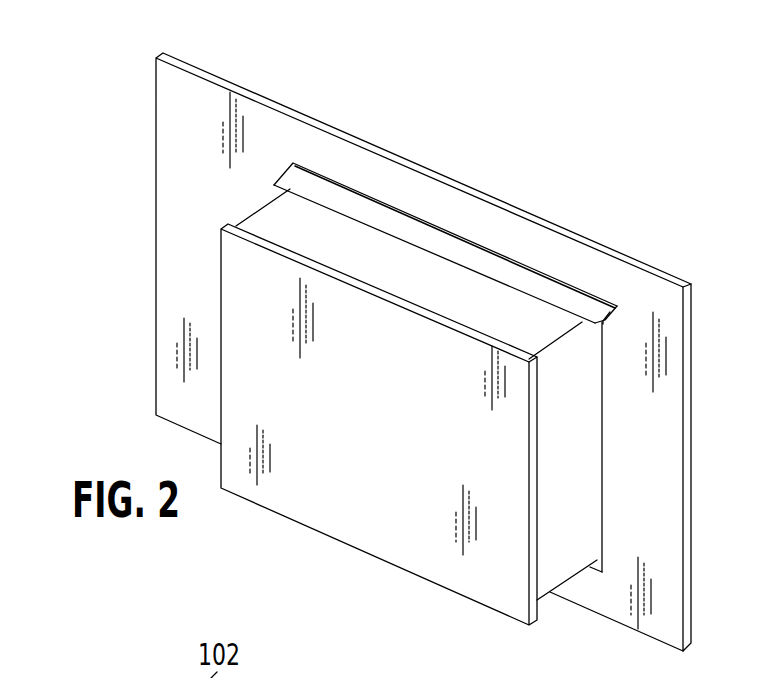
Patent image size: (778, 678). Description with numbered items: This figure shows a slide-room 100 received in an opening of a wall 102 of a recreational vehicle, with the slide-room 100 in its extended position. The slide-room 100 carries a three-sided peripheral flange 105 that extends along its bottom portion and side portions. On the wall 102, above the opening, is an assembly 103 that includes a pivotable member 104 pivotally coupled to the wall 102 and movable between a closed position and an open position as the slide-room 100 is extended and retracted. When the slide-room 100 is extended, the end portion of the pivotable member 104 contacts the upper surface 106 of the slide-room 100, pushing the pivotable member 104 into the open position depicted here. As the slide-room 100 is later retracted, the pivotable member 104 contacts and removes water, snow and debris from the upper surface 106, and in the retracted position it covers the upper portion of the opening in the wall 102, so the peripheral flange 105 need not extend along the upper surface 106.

The slide-room 100 is at (118, 92).
The wall 102 is at (198, 93).
The assembly 103 is at (348, 196).
The pivotable member 104 is at (582, 302).
The three-sided peripheral flange 105 is at (537, 610).
The upper surface 106 is at (443, 287).